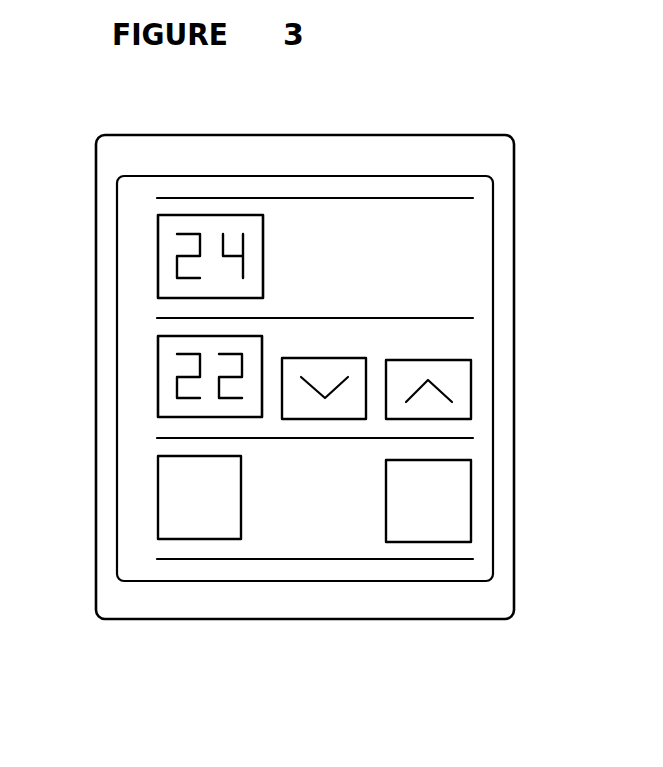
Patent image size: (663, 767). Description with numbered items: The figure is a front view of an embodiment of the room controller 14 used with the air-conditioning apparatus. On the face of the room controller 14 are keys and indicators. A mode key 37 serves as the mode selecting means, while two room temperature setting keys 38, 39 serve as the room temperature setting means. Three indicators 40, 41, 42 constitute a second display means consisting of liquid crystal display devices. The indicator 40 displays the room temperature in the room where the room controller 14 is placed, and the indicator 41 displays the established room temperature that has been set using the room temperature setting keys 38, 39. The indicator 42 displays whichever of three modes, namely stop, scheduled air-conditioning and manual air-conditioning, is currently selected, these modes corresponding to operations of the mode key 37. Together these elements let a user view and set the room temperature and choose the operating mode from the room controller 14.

The room controller 14 is at (197, 135).
The indicator 40 is at (157, 263).
The indicator 41 is at (157, 387).
The room temperature setting key 39 is at (310, 419).
The room temperature setting key 38 is at (471, 385).
The indicator 42 is at (157, 492).
The mode key 37 is at (471, 500).